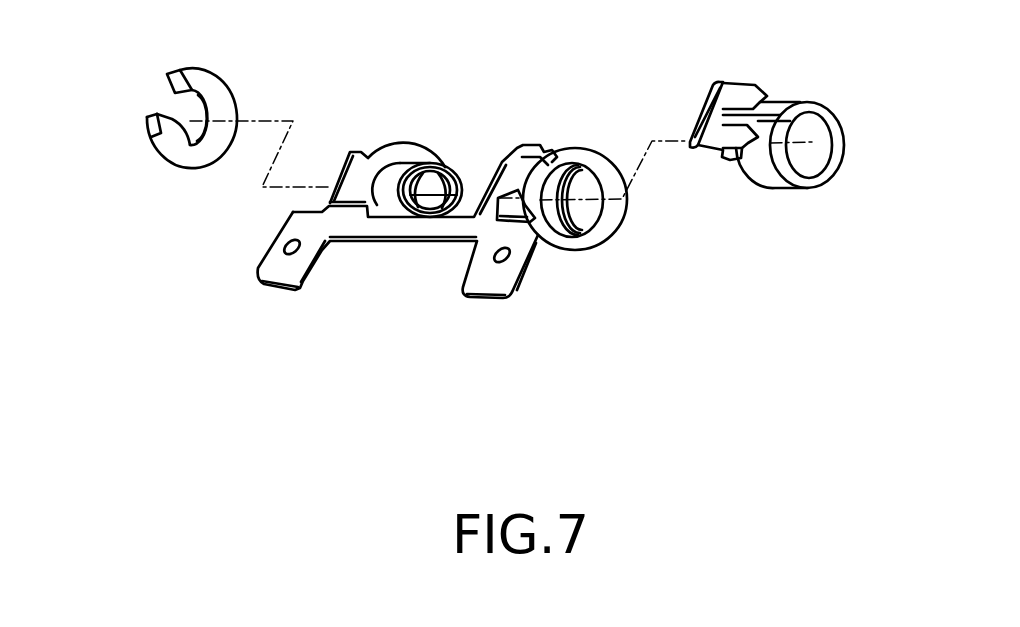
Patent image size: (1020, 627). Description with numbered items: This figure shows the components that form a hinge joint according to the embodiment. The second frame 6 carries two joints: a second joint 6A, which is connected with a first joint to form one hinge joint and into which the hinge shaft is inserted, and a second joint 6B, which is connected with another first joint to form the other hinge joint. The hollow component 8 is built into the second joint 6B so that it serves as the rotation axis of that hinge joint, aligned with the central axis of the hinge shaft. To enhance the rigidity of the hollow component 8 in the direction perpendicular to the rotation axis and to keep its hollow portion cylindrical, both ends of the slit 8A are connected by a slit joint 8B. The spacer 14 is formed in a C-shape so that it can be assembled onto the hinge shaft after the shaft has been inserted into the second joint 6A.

The spacer 14 is at (147, 127).
The second frame 6 is at (520, 278).
The second joint 6A is at (402, 168).
The second joint 6B is at (600, 240).
The hollow component 8 is at (770, 177).
The slit 8A is at (787, 110).
The slit joint 8B is at (713, 87).